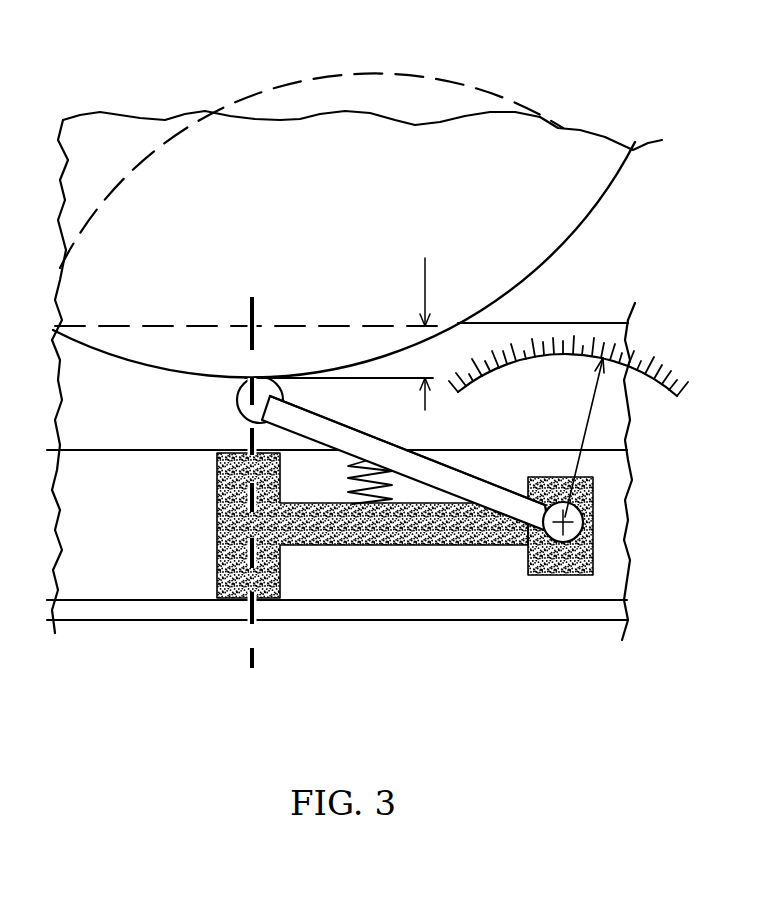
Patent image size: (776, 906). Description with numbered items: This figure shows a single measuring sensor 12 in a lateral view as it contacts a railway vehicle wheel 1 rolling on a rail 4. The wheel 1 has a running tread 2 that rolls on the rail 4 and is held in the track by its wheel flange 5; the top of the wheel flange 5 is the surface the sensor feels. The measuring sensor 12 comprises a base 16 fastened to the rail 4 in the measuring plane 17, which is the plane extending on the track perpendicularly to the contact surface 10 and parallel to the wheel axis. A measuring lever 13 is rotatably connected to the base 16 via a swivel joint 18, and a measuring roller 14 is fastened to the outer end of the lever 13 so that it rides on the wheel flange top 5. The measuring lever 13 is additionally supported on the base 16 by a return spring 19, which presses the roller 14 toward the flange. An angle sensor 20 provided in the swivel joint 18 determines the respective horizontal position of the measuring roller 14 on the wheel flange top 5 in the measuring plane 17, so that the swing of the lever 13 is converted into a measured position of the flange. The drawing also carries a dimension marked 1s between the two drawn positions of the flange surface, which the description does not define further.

The railway vehicle wheel 1 is at (293, 187).
The running tread 2 is at (497, 212).
The rail 4 is at (70, 540).
The wheel flange 5 is at (369, 259).
The sag displacement 1s is at (344, 312).
The contact surface 10 is at (250, 323).
The measuring sensor 12 is at (170, 640).
The measuring lever 13 is at (457, 480).
The measuring roller 14 is at (185, 403).
The base 16 is at (483, 480).
The measuring plane 17 is at (247, 673).
The swivel joint 18 is at (487, 547).
The return spring 19 is at (362, 482).
The angle sensor 20 is at (588, 426).